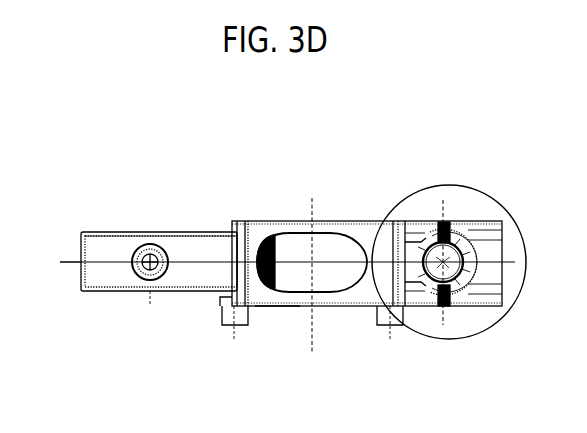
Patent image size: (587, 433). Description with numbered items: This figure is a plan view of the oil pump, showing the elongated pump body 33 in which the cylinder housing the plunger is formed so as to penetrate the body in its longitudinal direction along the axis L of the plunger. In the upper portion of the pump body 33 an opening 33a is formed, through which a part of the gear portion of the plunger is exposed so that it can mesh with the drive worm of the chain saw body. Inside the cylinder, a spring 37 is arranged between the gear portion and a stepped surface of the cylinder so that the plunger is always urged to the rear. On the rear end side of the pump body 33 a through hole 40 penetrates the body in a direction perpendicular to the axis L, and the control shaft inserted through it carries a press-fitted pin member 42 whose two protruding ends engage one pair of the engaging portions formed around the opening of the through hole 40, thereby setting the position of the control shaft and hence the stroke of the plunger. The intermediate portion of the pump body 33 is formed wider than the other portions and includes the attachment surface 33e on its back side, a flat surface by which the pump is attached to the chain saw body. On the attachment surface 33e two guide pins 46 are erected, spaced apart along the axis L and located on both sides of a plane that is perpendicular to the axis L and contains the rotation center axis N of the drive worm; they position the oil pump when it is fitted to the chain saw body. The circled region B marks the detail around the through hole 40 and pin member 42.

The pump body 33 is at (188, 232).
The opening 33a is at (330, 242).
The attachment surface 33e is at (283, 308).
The spring 37 is at (266, 287).
The through hole 40 is at (463, 230).
The pin member 42 is at (443, 300).
The guide pins 46 is at (218, 325).
The rotation center axis of the drive worm N is at (312, 202).
The axis of the plunger L is at (72, 263).
The detail circle B is at (472, 336).